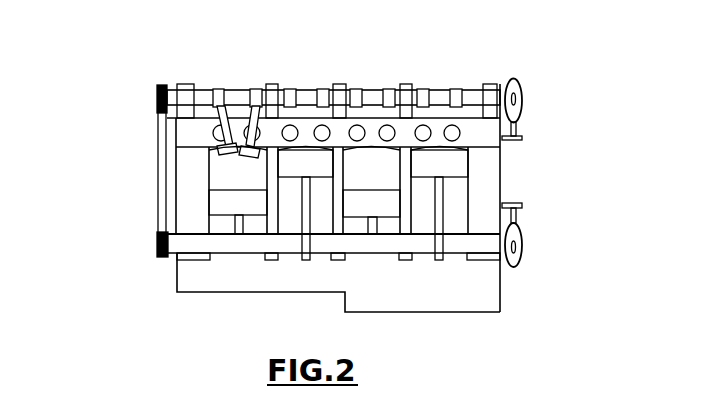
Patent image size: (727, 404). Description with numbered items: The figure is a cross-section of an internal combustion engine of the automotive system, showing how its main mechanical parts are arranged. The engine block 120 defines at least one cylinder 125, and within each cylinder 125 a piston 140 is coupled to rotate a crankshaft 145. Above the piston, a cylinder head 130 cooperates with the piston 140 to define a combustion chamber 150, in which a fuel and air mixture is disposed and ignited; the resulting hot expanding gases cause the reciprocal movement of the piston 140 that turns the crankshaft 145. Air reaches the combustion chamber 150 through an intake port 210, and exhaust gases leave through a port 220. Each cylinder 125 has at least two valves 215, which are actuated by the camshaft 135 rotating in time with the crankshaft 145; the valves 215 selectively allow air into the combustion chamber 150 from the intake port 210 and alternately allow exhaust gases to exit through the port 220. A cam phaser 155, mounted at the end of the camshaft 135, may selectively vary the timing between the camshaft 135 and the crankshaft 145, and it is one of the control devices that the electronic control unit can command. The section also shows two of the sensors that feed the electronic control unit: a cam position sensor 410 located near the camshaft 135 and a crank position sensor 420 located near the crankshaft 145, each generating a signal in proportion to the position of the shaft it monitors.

The engine block 120 is at (177, 190).
The cylinder 125 is at (345, 180).
The cylinder head 130 is at (176, 141).
The camshaft 135 is at (233, 92).
The piston 140 is at (375, 202).
The crankshaft 145 is at (203, 247).
The combustion chamber 150 is at (440, 148).
The cam phaser 155 is at (156, 95).
The intake port 210 is at (362, 128).
The valves 215 is at (240, 150).
The exhaust port 220 is at (308, 118).
The cam position sensor 410 is at (522, 138).
The crank position sensor 420 is at (522, 210).